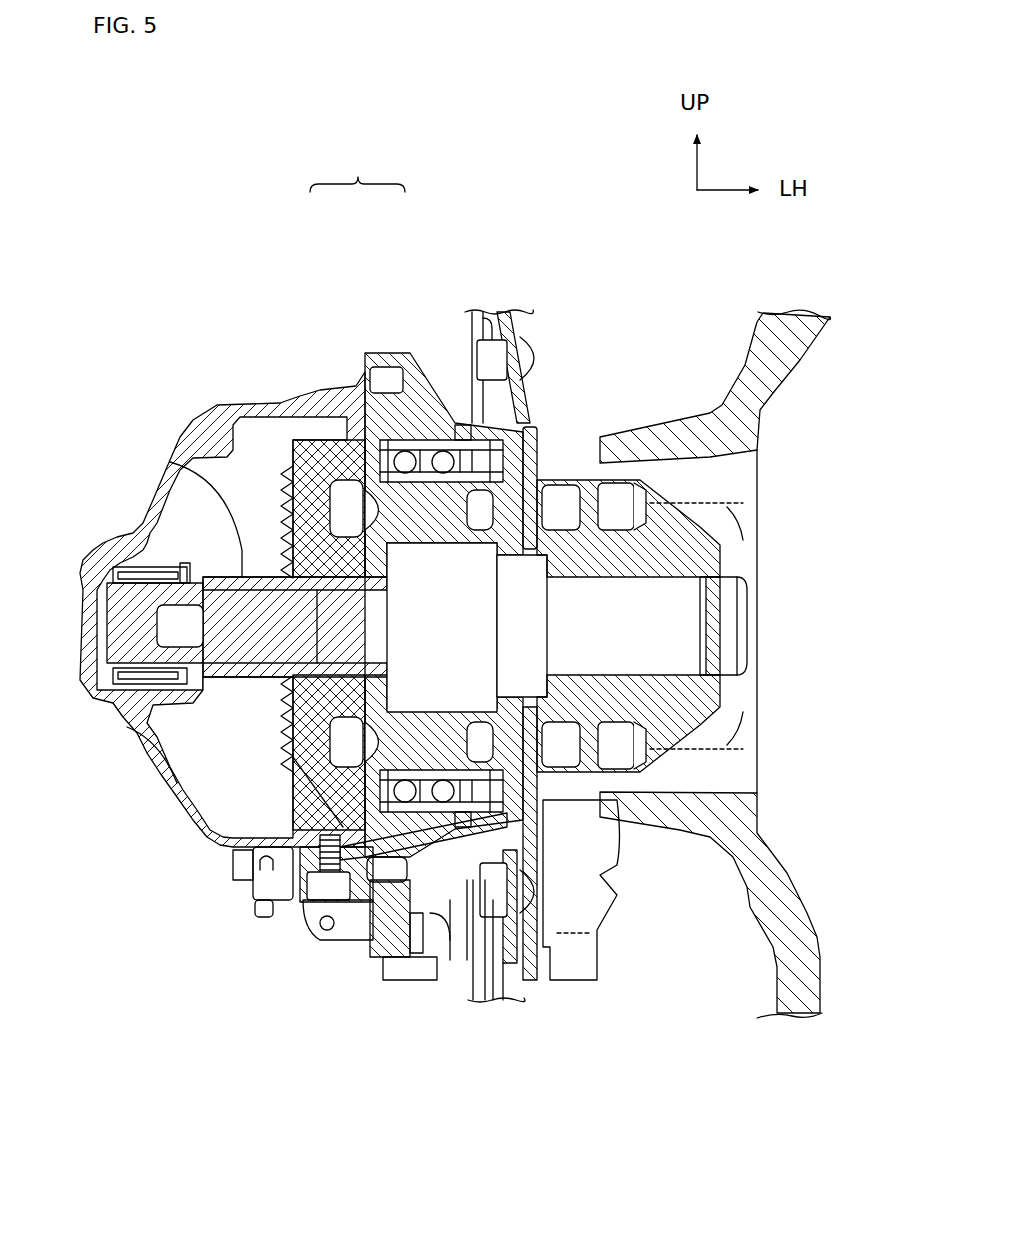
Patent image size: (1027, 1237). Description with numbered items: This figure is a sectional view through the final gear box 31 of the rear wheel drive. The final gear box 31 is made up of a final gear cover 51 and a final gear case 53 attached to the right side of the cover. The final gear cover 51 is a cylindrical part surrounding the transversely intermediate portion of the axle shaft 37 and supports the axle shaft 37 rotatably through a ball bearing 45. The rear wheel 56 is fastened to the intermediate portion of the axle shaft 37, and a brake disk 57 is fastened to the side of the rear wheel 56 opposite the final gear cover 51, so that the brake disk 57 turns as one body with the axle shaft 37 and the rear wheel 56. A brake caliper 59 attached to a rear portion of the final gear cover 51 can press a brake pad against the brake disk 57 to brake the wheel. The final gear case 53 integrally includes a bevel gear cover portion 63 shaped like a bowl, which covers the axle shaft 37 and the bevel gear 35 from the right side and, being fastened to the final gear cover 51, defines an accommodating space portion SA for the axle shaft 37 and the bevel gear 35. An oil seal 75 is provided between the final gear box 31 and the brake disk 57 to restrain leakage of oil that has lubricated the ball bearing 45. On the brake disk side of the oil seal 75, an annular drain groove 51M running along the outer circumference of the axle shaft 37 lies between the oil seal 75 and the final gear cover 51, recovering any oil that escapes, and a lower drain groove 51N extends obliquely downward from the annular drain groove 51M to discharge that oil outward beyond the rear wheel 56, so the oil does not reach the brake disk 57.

The final gear box 31 is at (357, 171).
The bevel gear 35 is at (286, 456).
The axle shaft 37 is at (238, 568).
The ball bearing 45 is at (420, 434).
The final gear cover 51 is at (393, 348).
The annular drain groove 51M is at (541, 403).
The lower drain groove 51N is at (430, 890).
The final gear case 53 is at (312, 386).
The rear wheel 56 is at (657, 410).
The brake disk 57 is at (510, 310).
The brake caliper 59 is at (564, 990).
The bevel gear cover portion 63 is at (156, 450).
The oil seal 75 is at (447, 395).
The accommodating space portion SA is at (203, 737).